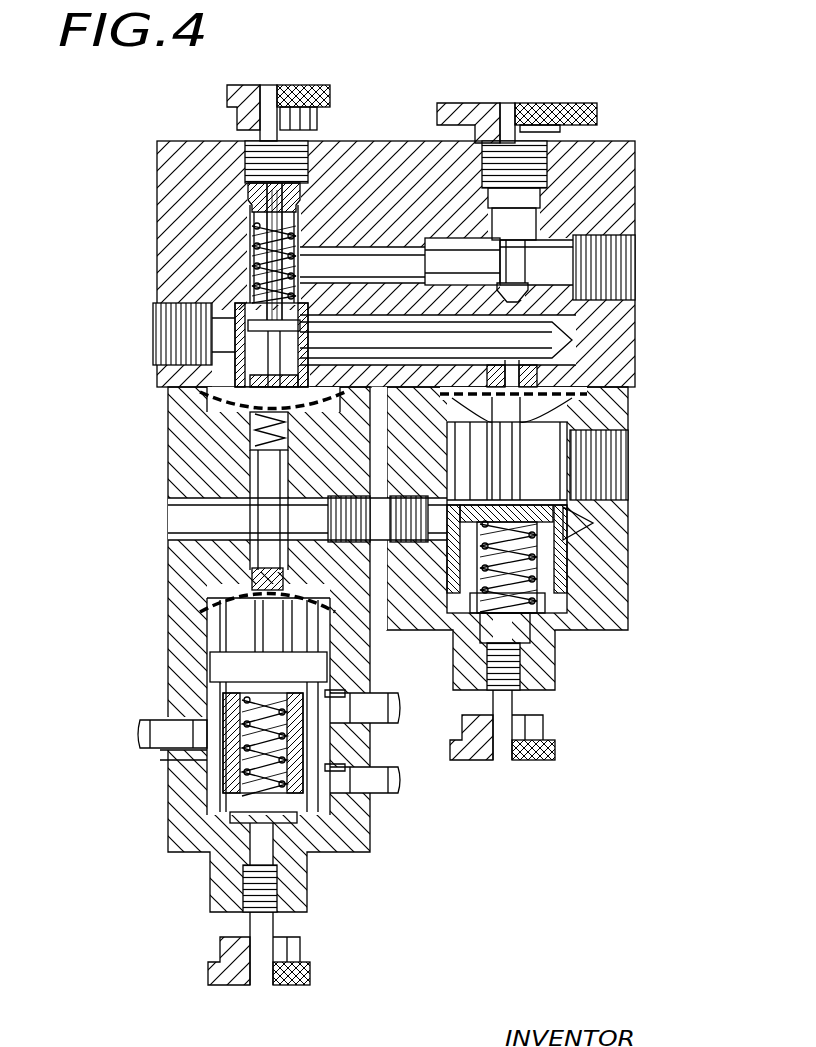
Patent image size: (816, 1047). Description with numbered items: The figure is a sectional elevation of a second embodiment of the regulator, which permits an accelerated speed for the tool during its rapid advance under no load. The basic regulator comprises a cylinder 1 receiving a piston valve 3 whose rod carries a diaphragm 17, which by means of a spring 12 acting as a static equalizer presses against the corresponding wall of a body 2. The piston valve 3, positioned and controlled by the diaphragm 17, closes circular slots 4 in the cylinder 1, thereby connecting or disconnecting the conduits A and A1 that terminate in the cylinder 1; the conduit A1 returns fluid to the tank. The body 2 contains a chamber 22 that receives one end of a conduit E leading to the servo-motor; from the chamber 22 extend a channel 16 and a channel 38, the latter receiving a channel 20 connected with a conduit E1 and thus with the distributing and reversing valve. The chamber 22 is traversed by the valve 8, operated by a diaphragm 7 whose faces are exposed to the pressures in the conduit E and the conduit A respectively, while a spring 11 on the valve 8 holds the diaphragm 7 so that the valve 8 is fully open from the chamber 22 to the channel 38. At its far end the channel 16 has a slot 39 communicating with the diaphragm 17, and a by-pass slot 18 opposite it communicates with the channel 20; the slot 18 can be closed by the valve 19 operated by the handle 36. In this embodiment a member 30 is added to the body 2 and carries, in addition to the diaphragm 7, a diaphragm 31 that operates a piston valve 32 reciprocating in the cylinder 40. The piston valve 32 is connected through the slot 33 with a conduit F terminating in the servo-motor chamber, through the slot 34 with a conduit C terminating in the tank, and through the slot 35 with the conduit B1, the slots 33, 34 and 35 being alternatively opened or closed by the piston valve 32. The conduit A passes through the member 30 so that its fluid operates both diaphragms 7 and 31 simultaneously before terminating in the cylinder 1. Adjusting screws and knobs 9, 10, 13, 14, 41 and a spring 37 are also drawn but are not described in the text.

The cylinder 1 is at (610, 525).
The body 2 is at (345, 152).
The piston valve 3 is at (555, 566).
The circular slots 4 is at (445, 479).
The diaphragm 7 is at (270, 401).
The valve 8 is at (265, 312).
The adjusting screw 9 is at (272, 96).
The knob 10 is at (235, 100).
The spring 11 is at (250, 242).
The spring 12 is at (520, 592).
The threaded adjusting stem 13 is at (515, 706).
The knob 14 is at (535, 734).
The channel 16 is at (355, 330).
The diaphragm 17 is at (570, 396).
The by-pass slot 18 is at (545, 300).
The valve 19 is at (535, 302).
The channel 20 is at (450, 255).
The chamber 22 is at (240, 348).
The member 30 is at (195, 545).
The diaphragm 31 is at (255, 601).
The piston valve 32 is at (260, 692).
The slot 33 is at (180, 762).
The slot 34 is at (345, 691).
The slot 35 is at (345, 768).
The handle 36 is at (530, 117).
The spring 37 is at (265, 430).
The channel 38 is at (265, 230).
The slot 39 is at (545, 381).
The cylinder 40 is at (205, 806).
The knob 41 is at (225, 956).
The conduit A is at (185, 521).
The conduit A1 is at (620, 451).
The conduit B1 is at (385, 801).
The conduit C is at (385, 713).
The conduit E is at (180, 318).
The conduit E1 is at (625, 240).
The conduit F is at (150, 735).